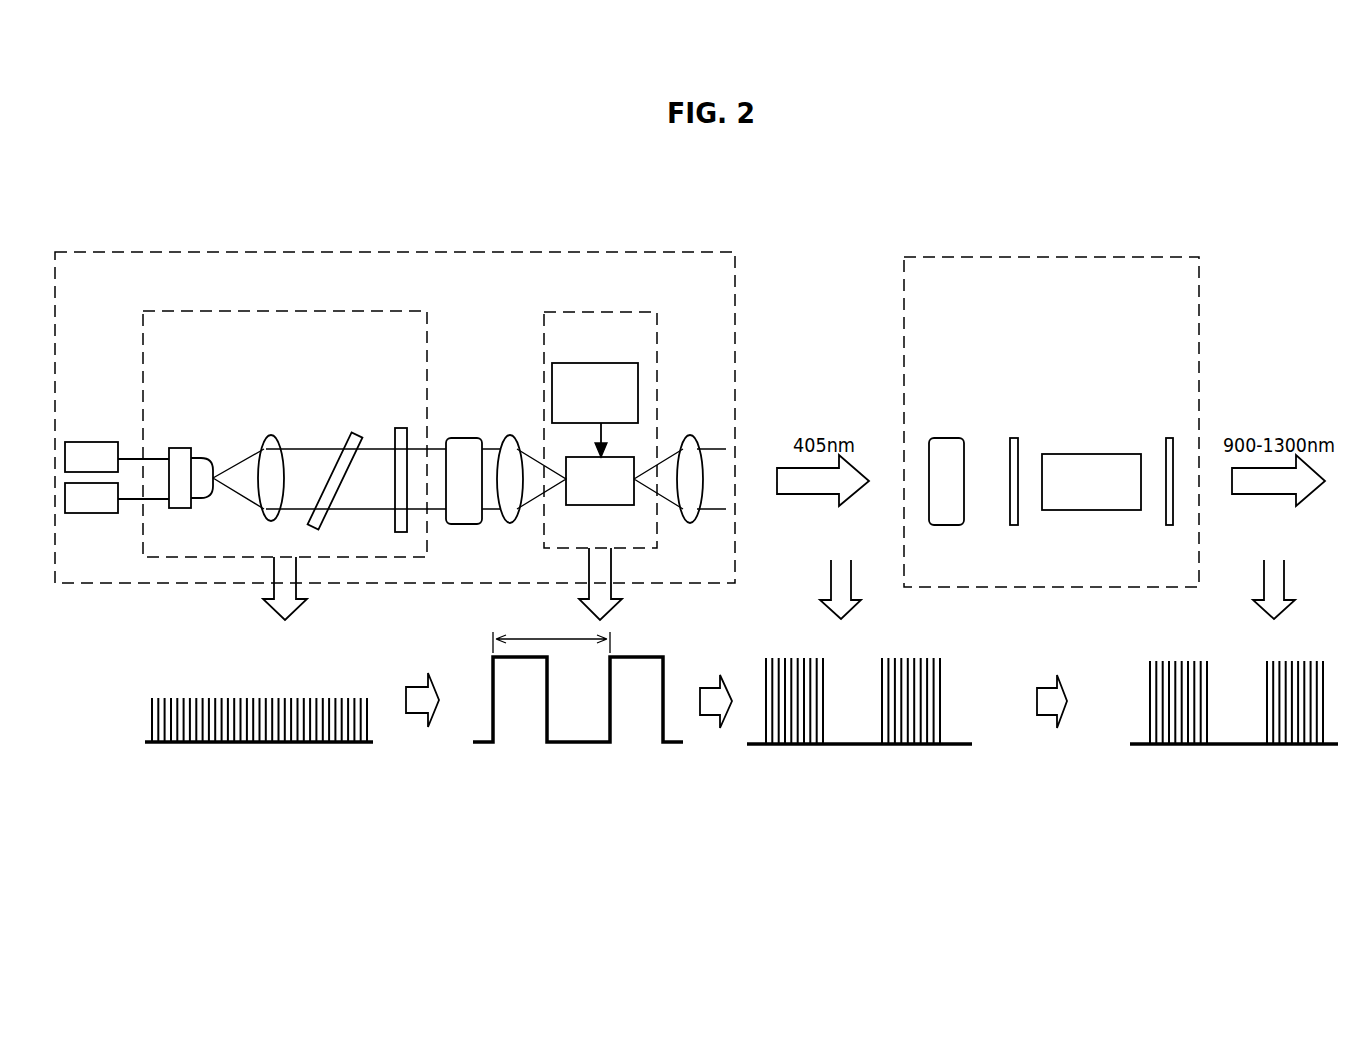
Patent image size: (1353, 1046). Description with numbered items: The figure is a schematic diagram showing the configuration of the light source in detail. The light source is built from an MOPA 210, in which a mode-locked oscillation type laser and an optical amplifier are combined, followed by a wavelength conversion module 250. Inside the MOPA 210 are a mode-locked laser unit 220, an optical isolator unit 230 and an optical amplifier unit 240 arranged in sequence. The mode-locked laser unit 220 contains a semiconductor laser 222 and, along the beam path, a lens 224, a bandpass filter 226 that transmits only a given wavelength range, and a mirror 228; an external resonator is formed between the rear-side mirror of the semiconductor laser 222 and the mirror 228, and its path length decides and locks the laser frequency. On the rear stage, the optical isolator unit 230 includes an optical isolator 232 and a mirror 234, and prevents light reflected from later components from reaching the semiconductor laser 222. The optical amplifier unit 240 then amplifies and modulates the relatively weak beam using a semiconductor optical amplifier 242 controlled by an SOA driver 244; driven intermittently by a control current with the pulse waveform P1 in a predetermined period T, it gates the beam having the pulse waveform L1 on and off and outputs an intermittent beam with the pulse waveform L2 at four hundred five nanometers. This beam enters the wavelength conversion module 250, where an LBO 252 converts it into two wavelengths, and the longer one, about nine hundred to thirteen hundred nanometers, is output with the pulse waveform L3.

The MOPA 210 is at (650, 252).
The mode-locked laser unit 220 is at (411, 310).
The semiconductor laser 222 is at (178, 446).
The lens 224 is at (268, 434).
The bandpass filter 226 is at (343, 438).
The mirror 228 is at (392, 437).
The optical isolator unit 230 is at (545, 342).
The optical isolator 232 is at (493, 438).
The mirror 234 is at (509, 434).
The optical amplifier unit 240 is at (598, 311).
The semiconductor optical amplifier 242 is at (601, 506).
The SOA driver 244 is at (600, 362).
The wavelength conversion module 250 is at (1198, 257).
The LBO 252 is at (1090, 454).
The pulse waveform L1 is at (268, 770).
The pulse waveform P1 is at (586, 770).
The pulse waveform L2 is at (854, 772).
The pulse waveform L3 is at (1241, 772).